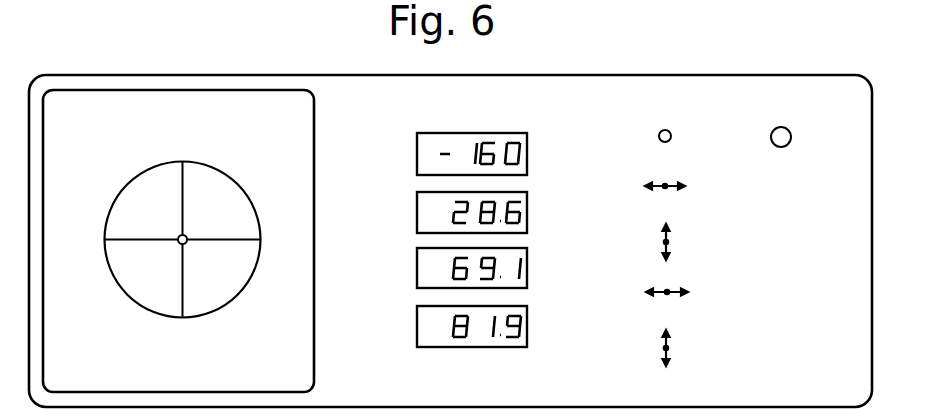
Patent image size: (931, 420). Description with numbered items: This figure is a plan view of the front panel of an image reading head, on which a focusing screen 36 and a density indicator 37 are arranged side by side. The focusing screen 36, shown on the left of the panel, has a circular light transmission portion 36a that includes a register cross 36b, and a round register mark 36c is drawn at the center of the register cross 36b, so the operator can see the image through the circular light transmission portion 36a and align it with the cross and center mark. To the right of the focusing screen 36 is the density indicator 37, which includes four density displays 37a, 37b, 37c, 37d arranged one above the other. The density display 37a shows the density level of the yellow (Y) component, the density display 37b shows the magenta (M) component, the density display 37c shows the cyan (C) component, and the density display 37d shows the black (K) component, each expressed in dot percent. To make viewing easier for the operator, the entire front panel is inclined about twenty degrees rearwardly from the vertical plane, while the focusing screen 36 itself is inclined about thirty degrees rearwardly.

The focusing screen 36 is at (179, 102).
The circular light transmission portion 36a is at (236, 203).
The register cross 36b is at (182, 184).
The round register mark 36c is at (186, 243).
The density indicator 37 is at (450, 211).
The density display 37a is at (527, 155).
The density display 37b is at (527, 219).
The density display 37c is at (527, 273).
The density display 37d is at (527, 328).